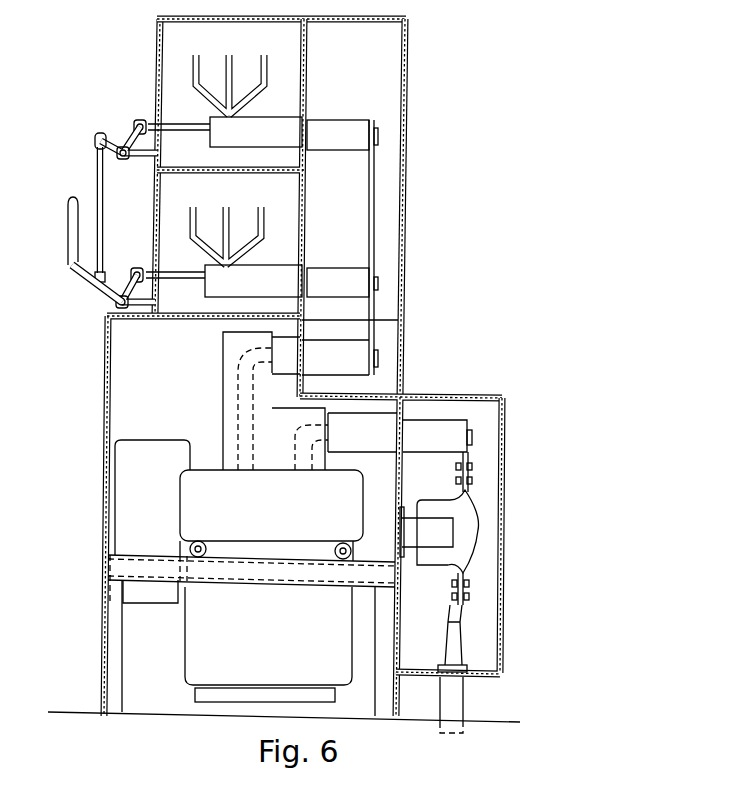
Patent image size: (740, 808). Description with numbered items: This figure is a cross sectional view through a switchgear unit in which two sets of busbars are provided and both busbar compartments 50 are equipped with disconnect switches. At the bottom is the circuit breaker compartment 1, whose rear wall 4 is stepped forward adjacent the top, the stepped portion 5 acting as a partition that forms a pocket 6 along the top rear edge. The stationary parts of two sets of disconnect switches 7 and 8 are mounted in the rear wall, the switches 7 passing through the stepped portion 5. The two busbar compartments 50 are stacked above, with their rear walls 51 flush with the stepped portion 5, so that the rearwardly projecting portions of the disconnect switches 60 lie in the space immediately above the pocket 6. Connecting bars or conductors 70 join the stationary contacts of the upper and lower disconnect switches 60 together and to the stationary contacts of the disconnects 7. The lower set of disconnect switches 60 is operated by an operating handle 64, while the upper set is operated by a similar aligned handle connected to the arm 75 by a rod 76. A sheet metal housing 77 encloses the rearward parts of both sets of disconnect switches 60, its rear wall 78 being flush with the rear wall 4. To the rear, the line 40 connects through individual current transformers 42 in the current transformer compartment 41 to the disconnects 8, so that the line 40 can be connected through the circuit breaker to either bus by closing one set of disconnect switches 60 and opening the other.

The circuit breaker compartment 1 is at (155, 688).
The rear wall 4 is at (402, 379).
The forwardly stepped portion of rear wall 5 is at (302, 380).
The pocket 6 is at (387, 362).
The disconnect switches 7 is at (340, 347).
The disconnect switches 8 is at (382, 447).
The line 40 is at (465, 700).
The current transformer compartment 41 is at (487, 617).
The current transformers 42 is at (463, 520).
The busbar compartments 50 is at (170, 59).
The rear walls of busbar compartments 51 is at (308, 79).
The disconnect switches 60 is at (227, 141).
The operating handle 64 is at (70, 268).
The connecting bars or conductors 70 is at (375, 197).
The arm 75 is at (116, 146).
The rod 76 is at (98, 168).
The sheet metal housing 77 is at (390, 80).
The rear wall of housing 78 is at (407, 130).